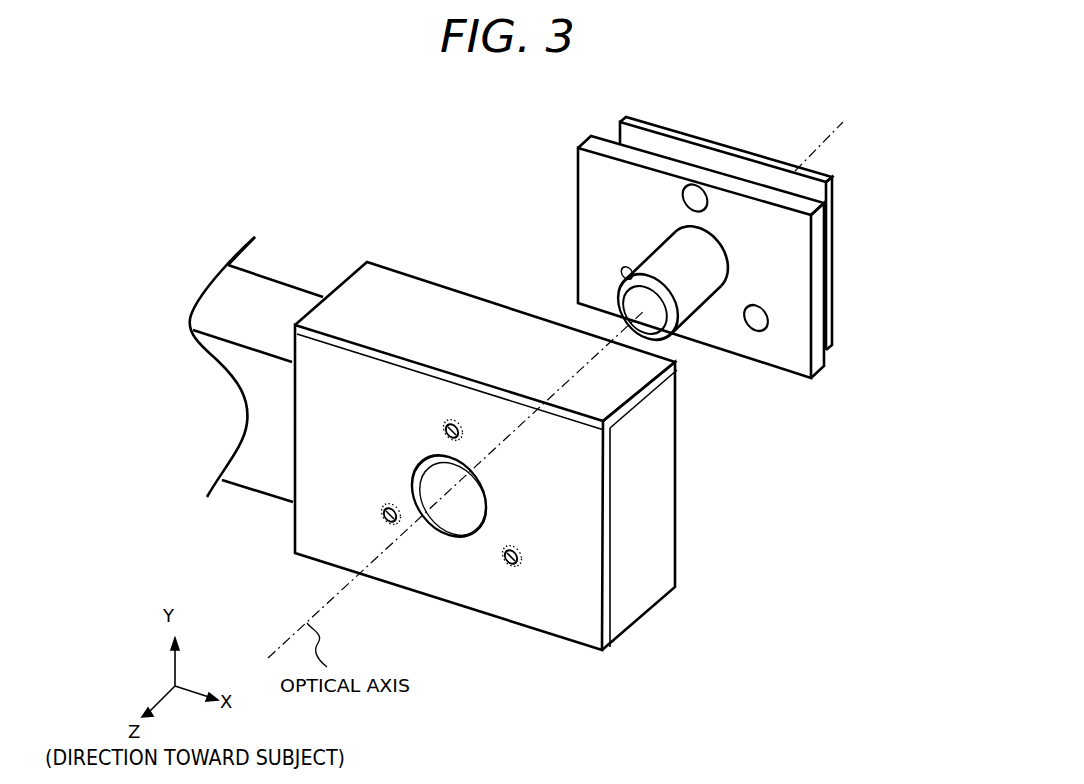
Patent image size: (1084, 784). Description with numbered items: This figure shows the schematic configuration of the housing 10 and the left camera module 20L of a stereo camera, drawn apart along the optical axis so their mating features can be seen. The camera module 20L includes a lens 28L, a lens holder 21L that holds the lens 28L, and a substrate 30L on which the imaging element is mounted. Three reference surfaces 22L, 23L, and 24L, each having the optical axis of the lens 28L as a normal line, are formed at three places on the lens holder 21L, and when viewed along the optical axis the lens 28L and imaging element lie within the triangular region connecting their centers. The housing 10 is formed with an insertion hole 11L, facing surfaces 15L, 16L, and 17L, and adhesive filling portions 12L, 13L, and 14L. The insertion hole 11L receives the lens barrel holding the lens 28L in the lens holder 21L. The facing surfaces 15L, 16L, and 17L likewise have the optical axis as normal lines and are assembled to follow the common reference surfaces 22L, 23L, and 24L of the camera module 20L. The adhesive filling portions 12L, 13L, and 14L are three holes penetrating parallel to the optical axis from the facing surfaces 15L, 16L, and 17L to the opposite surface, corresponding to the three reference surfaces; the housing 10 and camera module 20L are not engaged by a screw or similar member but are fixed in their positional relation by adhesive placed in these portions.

The housing 10 is at (235, 302).
The insertion hole 11L is at (435, 528).
The adhesive filling portion 12L is at (447, 424).
The adhesive filling portion 13L is at (385, 523).
The adhesive filling portion 14L is at (511, 562).
The facing surface 15L is at (457, 418).
The facing surface 16L is at (382, 520).
The facing surface 17L is at (524, 558).
The camera module 20L is at (870, 167).
The lens holder 21L is at (690, 287).
The reference surface 22L is at (693, 196).
The reference surface 23L is at (625, 272).
The reference surface 24L is at (758, 325).
The lens 28L is at (633, 300).
The substrate 30L is at (618, 130).